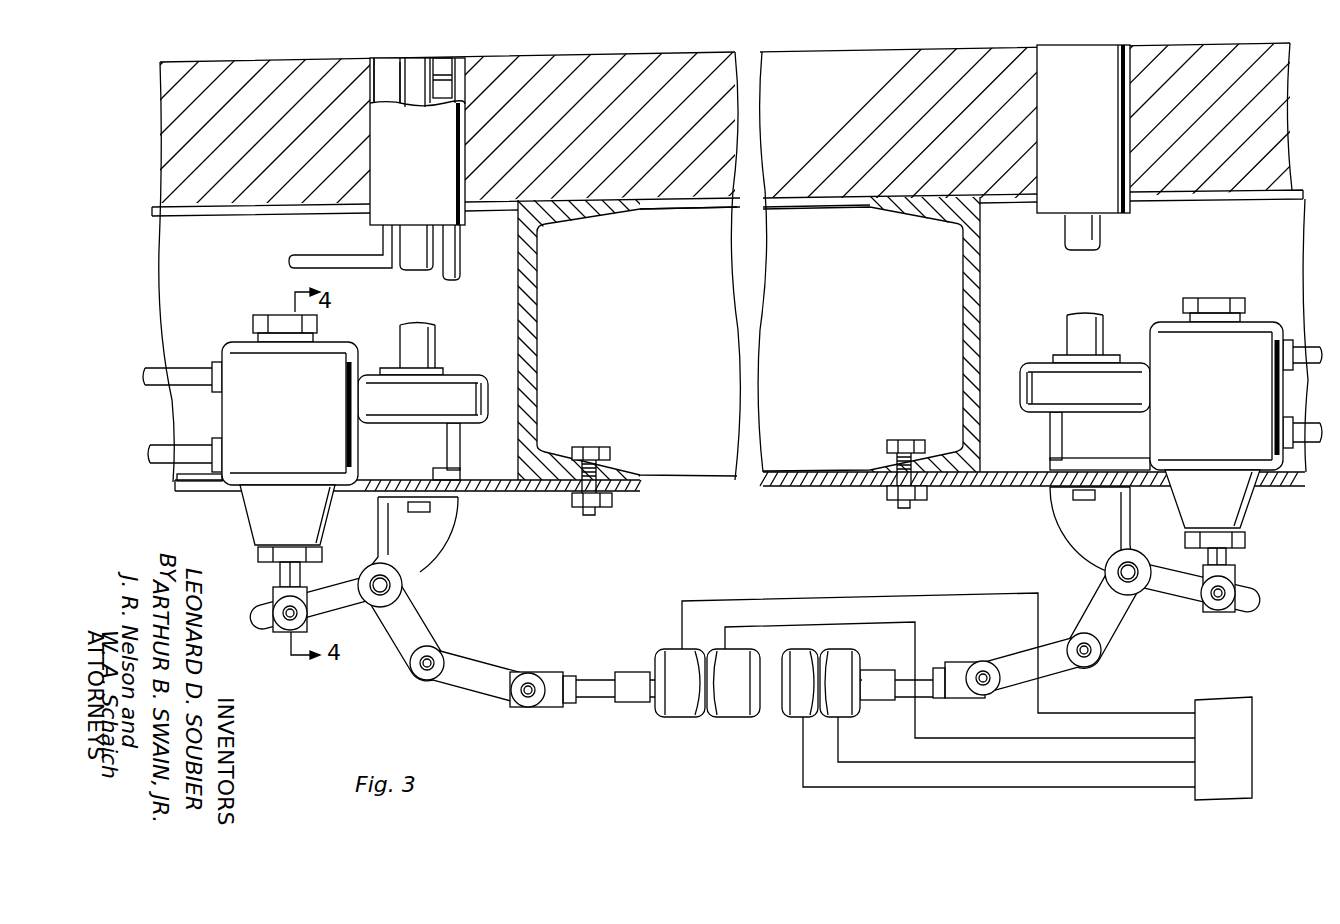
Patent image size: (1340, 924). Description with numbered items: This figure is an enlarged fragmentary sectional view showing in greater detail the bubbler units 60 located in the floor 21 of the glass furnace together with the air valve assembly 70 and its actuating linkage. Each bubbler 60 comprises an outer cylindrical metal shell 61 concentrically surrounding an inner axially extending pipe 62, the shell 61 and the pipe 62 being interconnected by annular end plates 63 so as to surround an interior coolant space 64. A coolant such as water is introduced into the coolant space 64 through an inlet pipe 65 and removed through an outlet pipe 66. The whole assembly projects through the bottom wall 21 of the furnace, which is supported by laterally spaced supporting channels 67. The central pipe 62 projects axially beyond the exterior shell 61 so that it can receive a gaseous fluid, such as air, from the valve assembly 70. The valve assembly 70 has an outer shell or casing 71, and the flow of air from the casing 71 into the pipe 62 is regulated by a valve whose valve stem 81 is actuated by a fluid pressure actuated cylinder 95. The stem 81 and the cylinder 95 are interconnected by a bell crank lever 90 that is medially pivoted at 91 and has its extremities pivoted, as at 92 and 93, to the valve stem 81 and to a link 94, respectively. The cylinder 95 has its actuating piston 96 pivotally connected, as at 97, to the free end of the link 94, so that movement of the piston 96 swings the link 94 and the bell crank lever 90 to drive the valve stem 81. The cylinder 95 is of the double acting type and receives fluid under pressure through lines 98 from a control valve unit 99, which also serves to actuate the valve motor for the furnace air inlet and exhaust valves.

The floor 21 is at (640, 62).
The bubbler unit 60 is at (704, 196).
The outer cylindrical metal shell 61 is at (428, 186).
The inner axially extending pipe 62 is at (440, 62).
The annular end plates 63 is at (386, 62).
The interior coolant space 64 is at (388, 100).
The inlet pipe 65 is at (462, 80).
The outlet pipe 66 is at (360, 262).
The supporting channels 67 is at (540, 342).
The valve assembly 70 is at (721, 421).
The outer shell or casing 71 is at (752, 421).
The valve stem 81 is at (282, 573).
The bell crank lever 90 is at (418, 628).
The medial pivot 91 is at (393, 584).
The pivot 92 is at (280, 615).
The pivot 93 is at (424, 668).
The link 94 is at (490, 672).
The fluid pressure actuated cylinder 95 is at (683, 705).
The actuating piston 96 is at (588, 688).
The pivot 97 is at (530, 696).
The lines 98 is at (748, 627).
The control valve unit 99 is at (1242, 729).